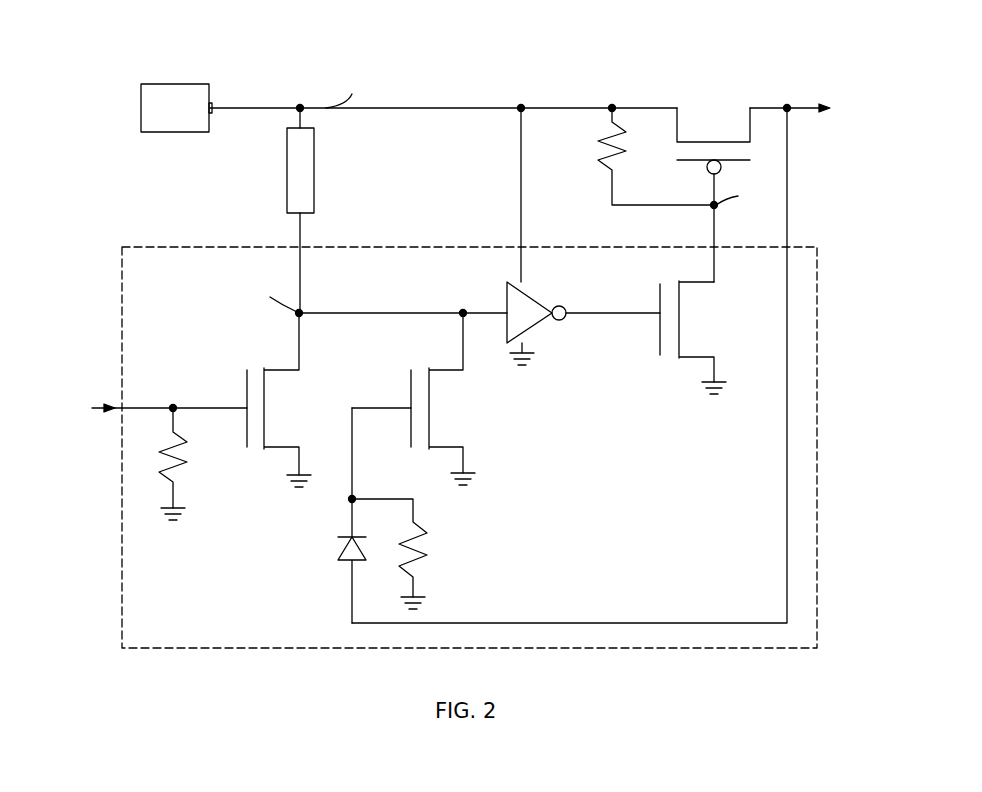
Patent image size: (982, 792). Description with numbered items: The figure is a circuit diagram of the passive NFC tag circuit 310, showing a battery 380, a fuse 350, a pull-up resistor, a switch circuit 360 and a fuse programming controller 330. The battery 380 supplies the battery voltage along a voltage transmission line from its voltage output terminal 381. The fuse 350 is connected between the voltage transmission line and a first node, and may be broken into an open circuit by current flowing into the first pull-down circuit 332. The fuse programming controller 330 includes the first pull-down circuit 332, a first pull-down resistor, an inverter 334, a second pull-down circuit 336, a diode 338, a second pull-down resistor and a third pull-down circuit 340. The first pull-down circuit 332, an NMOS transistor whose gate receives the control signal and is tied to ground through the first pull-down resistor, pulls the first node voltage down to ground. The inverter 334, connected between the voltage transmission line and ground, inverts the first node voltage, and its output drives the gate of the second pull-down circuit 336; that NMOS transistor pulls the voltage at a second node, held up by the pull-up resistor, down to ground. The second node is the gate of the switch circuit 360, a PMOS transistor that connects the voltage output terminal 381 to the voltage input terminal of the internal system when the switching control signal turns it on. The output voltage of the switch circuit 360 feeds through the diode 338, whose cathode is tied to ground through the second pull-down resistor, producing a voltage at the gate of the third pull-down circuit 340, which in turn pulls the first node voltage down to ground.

The passive NFC tag circuit 310 is at (77, 72).
The battery 380 is at (178, 83).
The voltage output terminal 381 is at (235, 92).
The fuse 350 is at (314, 158).
The fuse programming controller 330 is at (183, 247).
The first pull-down circuit 332 is at (266, 409).
The inverter 334 is at (562, 283).
The second pull-down circuit 336 is at (682, 317).
The diode 338 is at (328, 580).
The third pull-down circuit 340 is at (431, 409).
The switch circuit 360 is at (712, 140).